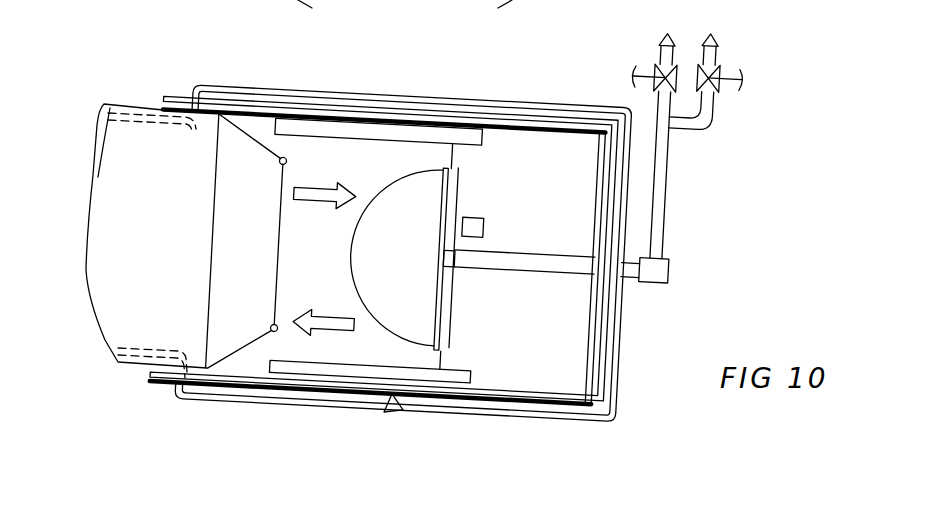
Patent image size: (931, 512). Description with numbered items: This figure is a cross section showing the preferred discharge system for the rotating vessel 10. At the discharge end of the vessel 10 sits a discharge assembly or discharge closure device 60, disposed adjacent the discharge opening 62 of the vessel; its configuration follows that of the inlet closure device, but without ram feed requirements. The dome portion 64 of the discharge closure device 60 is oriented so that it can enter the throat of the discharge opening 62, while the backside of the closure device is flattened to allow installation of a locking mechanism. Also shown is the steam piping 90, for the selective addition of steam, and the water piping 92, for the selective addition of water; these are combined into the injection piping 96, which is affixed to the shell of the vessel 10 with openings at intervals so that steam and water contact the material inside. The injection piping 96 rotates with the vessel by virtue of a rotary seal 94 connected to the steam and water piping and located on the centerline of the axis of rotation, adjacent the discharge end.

The vessel 10 is at (100, 292).
The discharge closure device 60 is at (393, 412).
The discharge opening 62 is at (273, 183).
The dome portion 64 is at (381, 190).
The steam piping 90 is at (708, 38).
The water piping 92 is at (662, 38).
The rotary seal 94 is at (660, 272).
The injection piping 96 is at (267, 92).